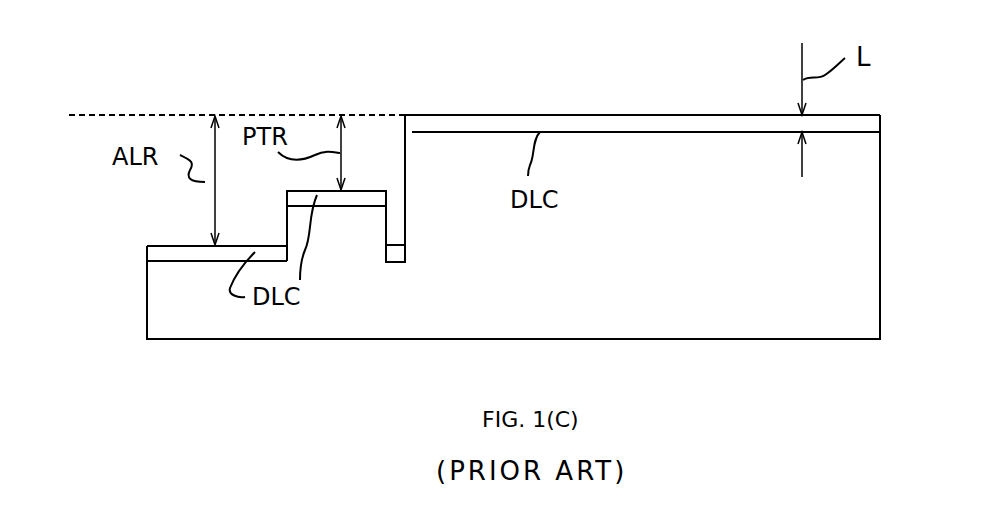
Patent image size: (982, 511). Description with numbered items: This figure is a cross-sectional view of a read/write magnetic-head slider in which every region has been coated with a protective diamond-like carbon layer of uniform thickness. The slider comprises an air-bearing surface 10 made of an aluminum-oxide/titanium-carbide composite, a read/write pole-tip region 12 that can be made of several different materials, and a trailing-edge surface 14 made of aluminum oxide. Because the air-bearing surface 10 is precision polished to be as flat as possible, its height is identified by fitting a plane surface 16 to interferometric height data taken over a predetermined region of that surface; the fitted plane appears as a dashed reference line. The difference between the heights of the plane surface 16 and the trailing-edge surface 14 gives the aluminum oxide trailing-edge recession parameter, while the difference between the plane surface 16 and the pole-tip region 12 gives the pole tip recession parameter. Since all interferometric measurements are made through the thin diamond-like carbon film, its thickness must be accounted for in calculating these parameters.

The air-bearing surface 10 is at (653, 115).
The read/write pole-tip region 12 is at (365, 182).
The trailing-edge surface 14 is at (172, 246).
The plane surface 16 is at (92, 115).